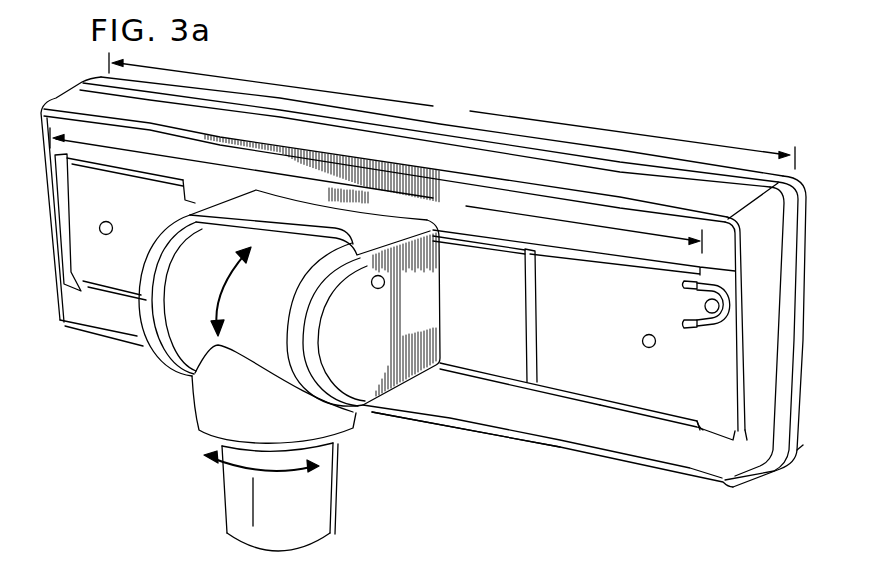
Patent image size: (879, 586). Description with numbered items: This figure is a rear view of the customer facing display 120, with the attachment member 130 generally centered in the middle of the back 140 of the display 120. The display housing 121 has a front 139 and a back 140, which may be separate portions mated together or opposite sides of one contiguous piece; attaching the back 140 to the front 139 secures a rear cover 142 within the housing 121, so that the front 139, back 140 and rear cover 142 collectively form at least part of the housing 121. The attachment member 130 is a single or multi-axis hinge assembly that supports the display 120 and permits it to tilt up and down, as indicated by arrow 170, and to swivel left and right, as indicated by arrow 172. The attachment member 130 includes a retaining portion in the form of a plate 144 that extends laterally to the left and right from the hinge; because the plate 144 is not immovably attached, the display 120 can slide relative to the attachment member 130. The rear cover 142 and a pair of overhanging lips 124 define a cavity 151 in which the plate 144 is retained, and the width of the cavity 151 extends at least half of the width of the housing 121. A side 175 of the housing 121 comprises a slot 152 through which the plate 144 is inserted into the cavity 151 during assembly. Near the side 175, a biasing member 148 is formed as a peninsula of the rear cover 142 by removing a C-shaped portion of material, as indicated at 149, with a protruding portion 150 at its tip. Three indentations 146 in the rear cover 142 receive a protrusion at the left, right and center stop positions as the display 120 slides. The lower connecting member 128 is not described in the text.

The display 120 is at (676, 117).
The display housing 121 is at (797, 185).
The overhanging lips 124 is at (568, 248).
The pipe connector 128 is at (222, 488).
The attachment member 130 is at (190, 362).
The front 139 is at (800, 430).
The back 140 is at (590, 443).
The rear cover 142 is at (563, 365).
The plate 144 is at (507, 319).
The indentations 146 is at (111, 223).
The biasing member 148 is at (676, 307).
The removed portion of rear cover 149 is at (683, 284).
The protruding portion 150 is at (697, 328).
The cavity 151 is at (634, 386).
The slot 152 is at (706, 420).
The arrow 170 is at (228, 290).
The arrow 172 is at (278, 472).
The side 175 is at (755, 468).